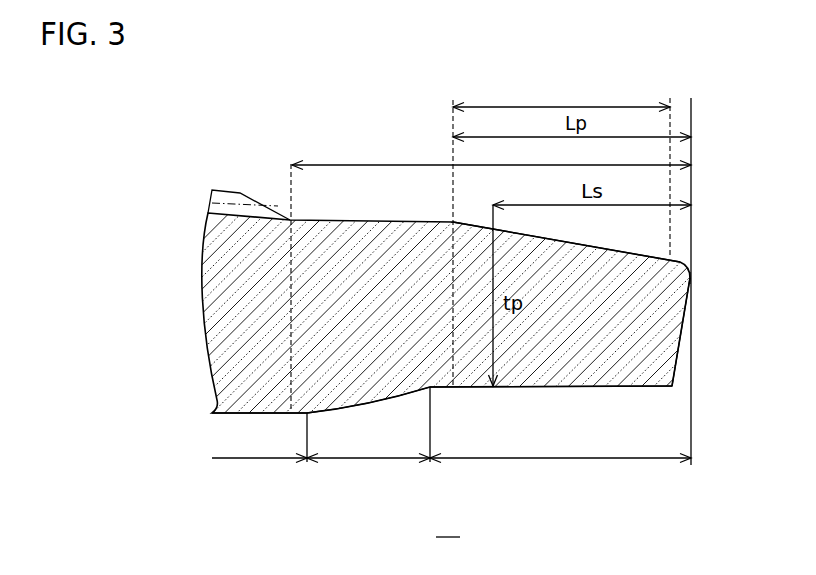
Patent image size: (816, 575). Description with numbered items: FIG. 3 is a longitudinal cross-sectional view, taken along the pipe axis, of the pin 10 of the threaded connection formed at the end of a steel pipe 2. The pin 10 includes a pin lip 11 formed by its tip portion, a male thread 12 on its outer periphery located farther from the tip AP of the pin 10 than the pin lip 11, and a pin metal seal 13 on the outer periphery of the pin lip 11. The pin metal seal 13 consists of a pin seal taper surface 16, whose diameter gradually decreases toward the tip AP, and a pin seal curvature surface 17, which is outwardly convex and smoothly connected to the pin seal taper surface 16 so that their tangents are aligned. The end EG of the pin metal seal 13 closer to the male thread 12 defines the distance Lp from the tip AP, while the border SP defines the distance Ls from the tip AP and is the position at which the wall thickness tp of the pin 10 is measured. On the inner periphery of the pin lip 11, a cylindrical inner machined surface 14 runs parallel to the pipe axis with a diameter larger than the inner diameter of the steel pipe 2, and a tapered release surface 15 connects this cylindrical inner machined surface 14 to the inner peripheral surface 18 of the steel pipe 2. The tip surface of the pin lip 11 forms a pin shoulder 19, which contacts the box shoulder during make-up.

The steel pipe 2 is at (250, 357).
The pin 10 is at (448, 526).
The pin lip 11 is at (378, 160).
The male thread 12 is at (243, 195).
The pin metal seal 13 is at (548, 105).
The cylindrical inner machined surface 14 is at (560, 462).
The release surface 15 is at (372, 462).
The pin seal taper surface 16 is at (575, 246).
The pin seal curvature surface 17 is at (470, 228).
The inner peripheral surface 18 is at (252, 462).
The pin shoulder 19 is at (683, 345).
The end of the pin metal seal EG is at (451, 221).
The border SP is at (500, 226).
The tip of the pin AP is at (694, 282).